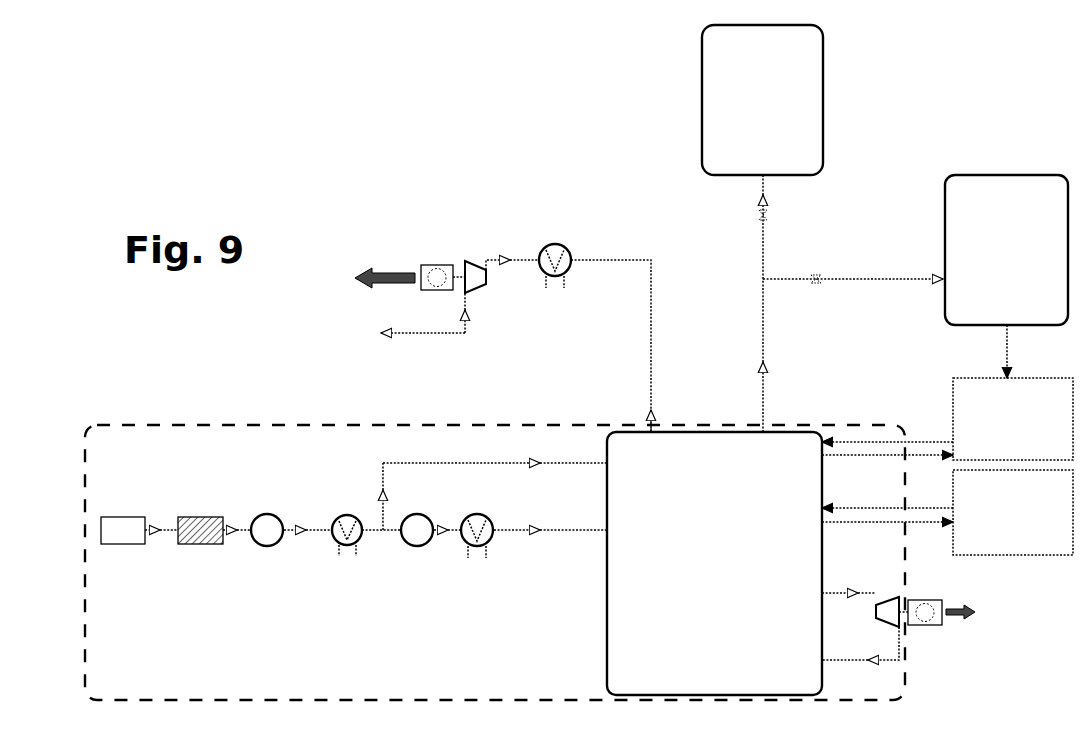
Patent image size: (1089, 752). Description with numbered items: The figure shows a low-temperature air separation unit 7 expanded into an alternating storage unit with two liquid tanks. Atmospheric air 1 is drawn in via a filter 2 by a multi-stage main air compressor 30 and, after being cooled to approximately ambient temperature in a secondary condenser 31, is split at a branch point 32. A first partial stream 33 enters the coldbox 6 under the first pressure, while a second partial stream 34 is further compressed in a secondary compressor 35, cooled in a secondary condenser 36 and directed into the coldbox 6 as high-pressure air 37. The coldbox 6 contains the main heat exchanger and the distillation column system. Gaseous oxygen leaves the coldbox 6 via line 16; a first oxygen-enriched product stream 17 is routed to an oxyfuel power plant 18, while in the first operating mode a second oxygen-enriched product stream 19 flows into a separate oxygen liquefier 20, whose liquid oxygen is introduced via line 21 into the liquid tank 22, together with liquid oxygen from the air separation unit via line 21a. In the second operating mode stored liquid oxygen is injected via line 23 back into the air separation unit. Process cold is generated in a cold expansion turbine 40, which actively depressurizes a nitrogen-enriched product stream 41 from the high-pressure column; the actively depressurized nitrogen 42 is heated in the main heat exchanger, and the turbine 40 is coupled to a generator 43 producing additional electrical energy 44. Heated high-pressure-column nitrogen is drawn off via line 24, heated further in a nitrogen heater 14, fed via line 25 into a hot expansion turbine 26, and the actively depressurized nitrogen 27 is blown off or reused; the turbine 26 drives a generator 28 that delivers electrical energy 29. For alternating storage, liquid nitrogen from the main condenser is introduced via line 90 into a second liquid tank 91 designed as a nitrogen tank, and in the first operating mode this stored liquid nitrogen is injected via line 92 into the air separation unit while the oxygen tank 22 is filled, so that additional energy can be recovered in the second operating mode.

The atmospheric air 1 is at (127, 545).
The filter 2 is at (205, 545).
The coldbox 6 is at (714, 563).
The low-temperature air separation unit 7 is at (262, 699).
The nitrogen heater 14 is at (553, 243).
The oxygen product line 16 is at (760, 330).
The first oxygen-enriched product stream 17 is at (757, 254).
The oxyfuel power plant 18 is at (762, 100).
The second oxygen-enriched product stream 19 is at (883, 282).
The oxygen liquefier 20 is at (1006, 250).
The liquid oxygen line 21 is at (1002, 366).
The liquid oxygen line from air separation unit 21a is at (893, 456).
The liquid tank 22 is at (1013, 419).
The liquid oxygen return line 23 is at (928, 440).
The nitrogen line 24 is at (651, 306).
The heated nitrogen line 25 is at (502, 257).
The hot expansion turbine 26 is at (489, 285).
The actively depressurized nitrogen 27 is at (465, 335).
The generator 28 is at (438, 264).
The electrical energy 29 is at (396, 273).
The main air compressor 30 is at (272, 547).
The secondary condenser 31 is at (346, 547).
The bypass line 32 is at (377, 535).
The first partial stream 33 is at (442, 463).
The second partial stream 34 is at (397, 533).
The secondary compressor 35 is at (422, 546).
The secondary condenser 36 is at (475, 546).
The high-pressure air 37 is at (552, 534).
The cold expansion turbine 40 is at (893, 596).
The nitrogen-enriched product stream 41 is at (850, 590).
The actively depressurized nitrogen 42 is at (880, 660).
The generator 43 is at (933, 598).
The electrical energy 44 is at (961, 607).
The third process fluid line 90 is at (871, 522).
The second liquid tank 91 is at (1013, 512).
The liquid nitrogen return line 92 is at (844, 507).